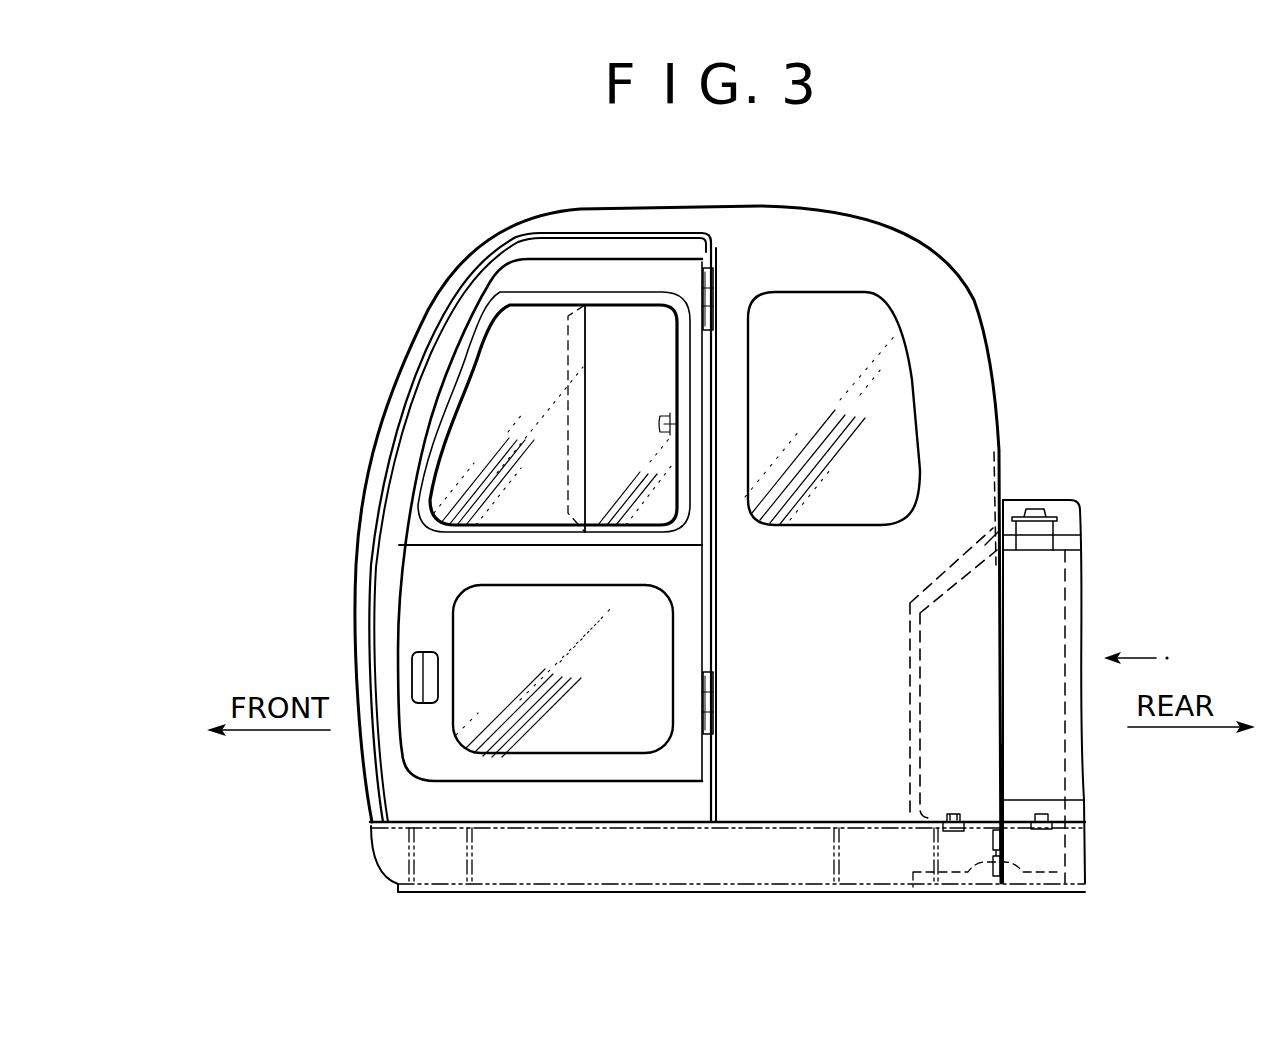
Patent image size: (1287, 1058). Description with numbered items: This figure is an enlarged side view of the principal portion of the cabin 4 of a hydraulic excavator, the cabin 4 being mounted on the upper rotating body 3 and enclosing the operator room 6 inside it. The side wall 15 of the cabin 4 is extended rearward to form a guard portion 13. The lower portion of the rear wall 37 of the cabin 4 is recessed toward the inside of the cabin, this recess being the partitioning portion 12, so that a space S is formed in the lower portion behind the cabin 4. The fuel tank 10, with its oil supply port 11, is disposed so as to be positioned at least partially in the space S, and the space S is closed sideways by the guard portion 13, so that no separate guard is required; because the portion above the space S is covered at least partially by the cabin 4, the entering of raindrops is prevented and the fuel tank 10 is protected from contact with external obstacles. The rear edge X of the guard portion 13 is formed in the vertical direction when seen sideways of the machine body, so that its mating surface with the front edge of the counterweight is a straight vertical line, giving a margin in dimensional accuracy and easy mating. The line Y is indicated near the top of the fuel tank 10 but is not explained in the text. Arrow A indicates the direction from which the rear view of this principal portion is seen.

The upper rotating body 3 is at (1061, 398).
The cabin 4 is at (553, 213).
The operator room 6 is at (857, 447).
The fuel tank 10 is at (1067, 594).
The oil supply port 11 is at (1060, 519).
The partitioning portion 12 is at (938, 582).
The guard portion 13 is at (963, 710).
The side wall 15 is at (842, 718).
The rear wall 37 is at (1000, 462).
The space S is at (966, 560).
The rear edge X is at (1001, 749).
The line Y is at (1003, 507).
The arrow A is at (1136, 643).